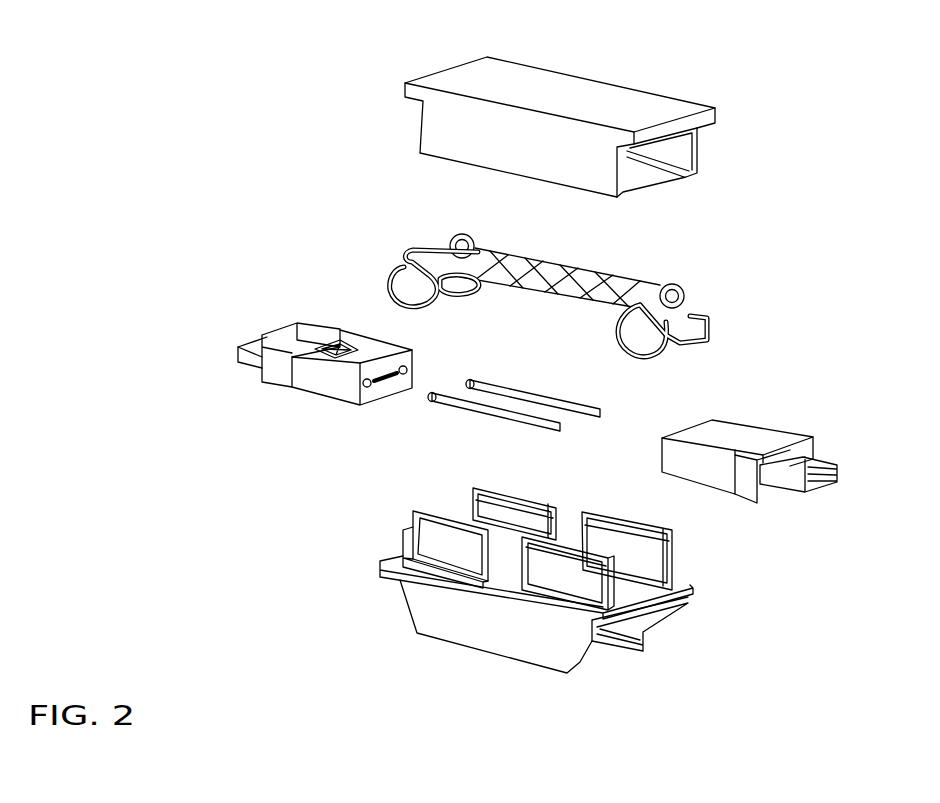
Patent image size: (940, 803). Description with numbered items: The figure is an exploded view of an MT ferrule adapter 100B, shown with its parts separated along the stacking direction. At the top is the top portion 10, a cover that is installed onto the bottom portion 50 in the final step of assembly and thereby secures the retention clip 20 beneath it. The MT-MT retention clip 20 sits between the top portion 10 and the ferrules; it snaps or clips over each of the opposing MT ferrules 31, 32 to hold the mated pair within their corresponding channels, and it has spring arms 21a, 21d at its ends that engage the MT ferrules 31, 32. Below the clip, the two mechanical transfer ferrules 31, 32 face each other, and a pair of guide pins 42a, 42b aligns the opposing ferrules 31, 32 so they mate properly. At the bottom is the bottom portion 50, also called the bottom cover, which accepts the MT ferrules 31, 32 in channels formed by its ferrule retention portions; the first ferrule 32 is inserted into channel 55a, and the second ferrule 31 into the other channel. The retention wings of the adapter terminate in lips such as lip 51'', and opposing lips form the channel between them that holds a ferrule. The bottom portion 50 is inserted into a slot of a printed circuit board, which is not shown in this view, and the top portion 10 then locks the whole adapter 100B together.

The MT ferrule adapter 100B is at (96, 103).
The top portion 10 is at (655, 79).
The MT-MT retention clip 20 is at (623, 247).
The spring arm 21d is at (422, 235).
The spring arm 21a is at (710, 324).
The MT ferrule 31 is at (252, 386).
The MT ferrule 32 is at (805, 416).
The guide pin 42a is at (605, 398).
The guide pin 42b is at (494, 412).
The bottom portion 50 is at (445, 670).
The lip 51'' is at (466, 624).
The channel 55a is at (640, 568).